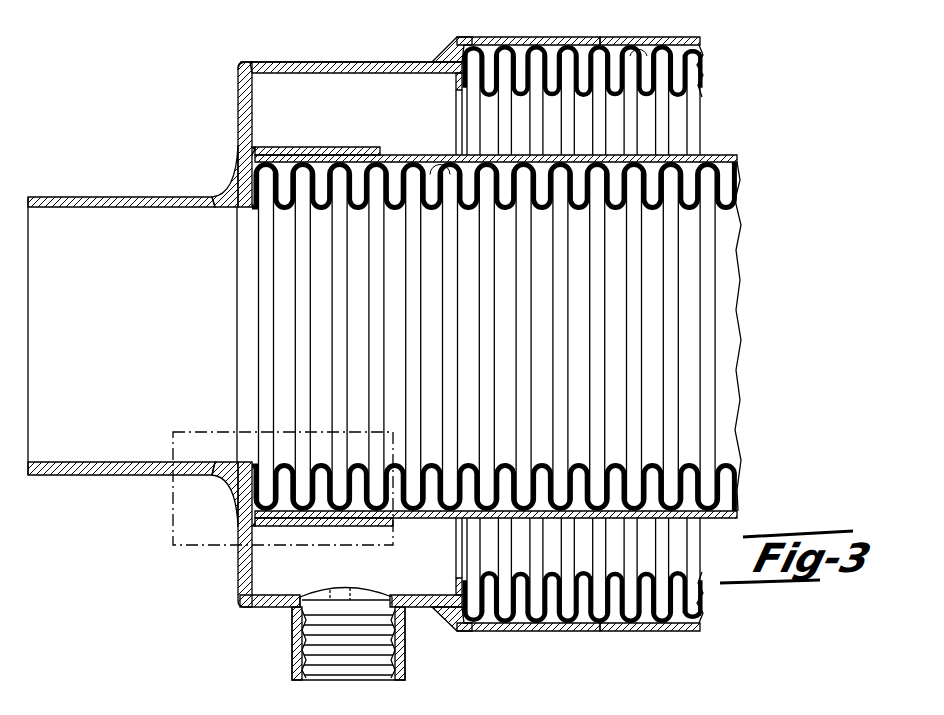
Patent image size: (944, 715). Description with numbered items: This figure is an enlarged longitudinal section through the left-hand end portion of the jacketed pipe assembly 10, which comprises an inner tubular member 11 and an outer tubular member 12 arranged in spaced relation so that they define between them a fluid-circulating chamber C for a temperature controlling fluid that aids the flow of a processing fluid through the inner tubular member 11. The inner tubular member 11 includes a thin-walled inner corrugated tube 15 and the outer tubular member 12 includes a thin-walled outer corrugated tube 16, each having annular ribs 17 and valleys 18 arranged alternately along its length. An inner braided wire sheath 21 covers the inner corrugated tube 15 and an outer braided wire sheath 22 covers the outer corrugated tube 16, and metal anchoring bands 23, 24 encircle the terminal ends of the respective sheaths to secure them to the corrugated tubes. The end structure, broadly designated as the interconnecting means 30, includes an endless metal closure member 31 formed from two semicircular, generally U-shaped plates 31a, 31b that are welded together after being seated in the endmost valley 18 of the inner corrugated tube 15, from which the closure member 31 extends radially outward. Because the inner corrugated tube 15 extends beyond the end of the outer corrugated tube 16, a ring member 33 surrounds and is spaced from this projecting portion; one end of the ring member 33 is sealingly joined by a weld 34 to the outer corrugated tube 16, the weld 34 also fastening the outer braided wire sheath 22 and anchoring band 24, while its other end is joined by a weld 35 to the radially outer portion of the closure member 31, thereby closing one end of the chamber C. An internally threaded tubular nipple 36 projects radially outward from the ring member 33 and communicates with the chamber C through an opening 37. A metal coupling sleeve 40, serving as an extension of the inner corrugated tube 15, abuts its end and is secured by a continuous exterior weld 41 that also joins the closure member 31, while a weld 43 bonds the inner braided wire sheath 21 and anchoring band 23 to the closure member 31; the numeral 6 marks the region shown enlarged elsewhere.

The jacketed pipe assembly 10 is at (787, 312).
The inner tubular member 11 is at (742, 212).
The outer tubular member 12 is at (700, 100).
The inner corrugated tube 15 is at (248, 289).
The outer corrugated tube 16 is at (699, 70).
The annular ribs 17 is at (642, 47).
The valleys 18 is at (684, 47).
The inner braided wire sheath 21 is at (732, 160).
The outer braided wire sheath 22 is at (698, 46).
The inner anchoring band 23 is at (350, 147).
The outer anchoring band 24 is at (517, 37).
The interconnecting means 30 is at (297, 62).
The metal closure member 31 is at (243, 123).
The semicircular plate 31a is at (240, 575).
The semicircular plate 31b is at (240, 100).
The ring member 33 is at (360, 62).
The weld 34 is at (445, 57).
The weld 35 is at (243, 64).
The tubular nipple 36 is at (392, 680).
The opening 37 is at (372, 590).
The metal coupling sleeve 40 is at (78, 197).
The continuous exterior weld 41 is at (226, 190).
The weld 43 is at (255, 149).
The fluid-circulating chamber C is at (634, 128).
The section indicator for FIG. 6 is at (188, 432).